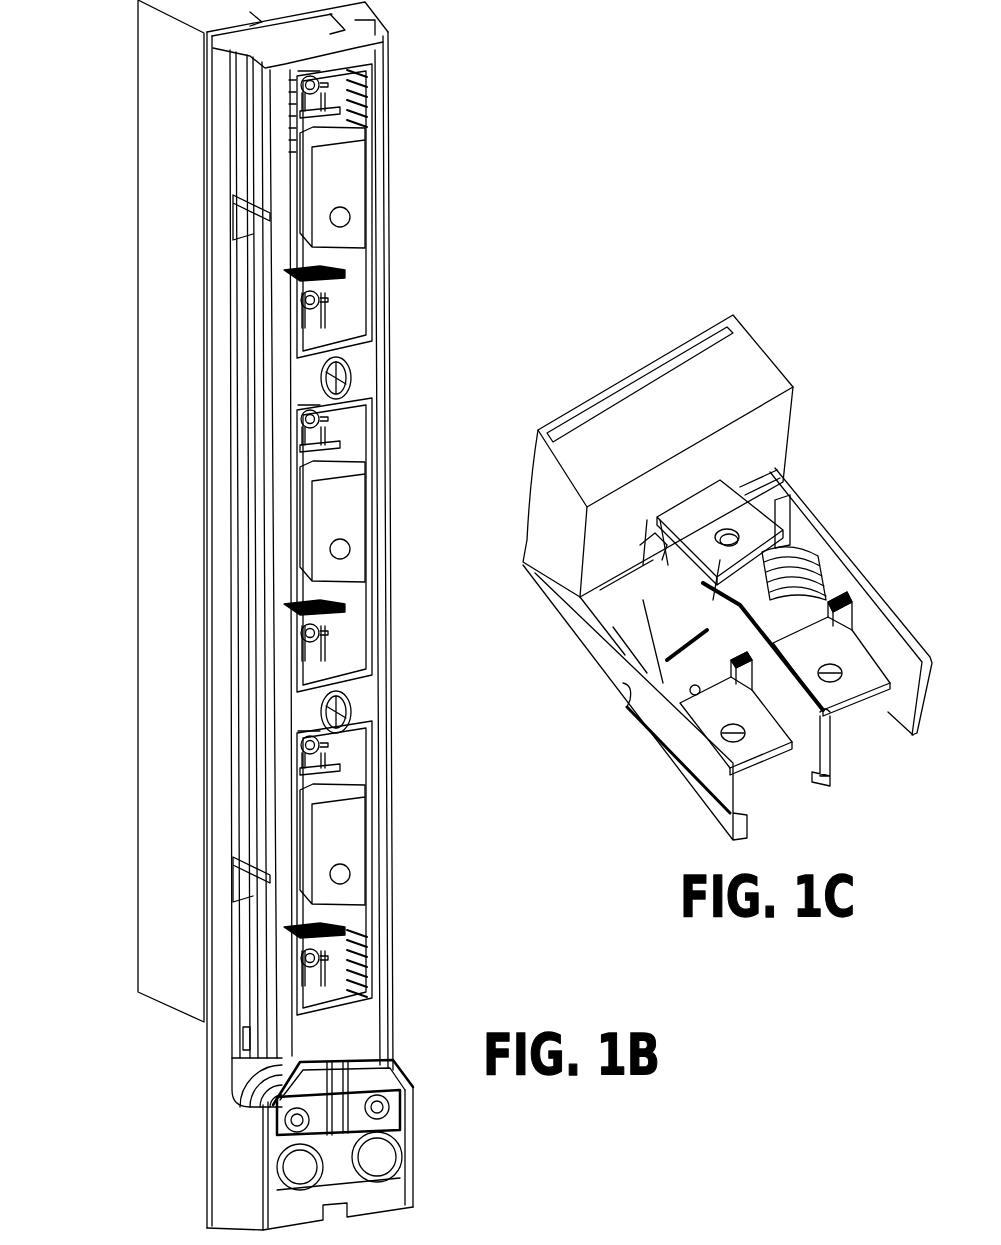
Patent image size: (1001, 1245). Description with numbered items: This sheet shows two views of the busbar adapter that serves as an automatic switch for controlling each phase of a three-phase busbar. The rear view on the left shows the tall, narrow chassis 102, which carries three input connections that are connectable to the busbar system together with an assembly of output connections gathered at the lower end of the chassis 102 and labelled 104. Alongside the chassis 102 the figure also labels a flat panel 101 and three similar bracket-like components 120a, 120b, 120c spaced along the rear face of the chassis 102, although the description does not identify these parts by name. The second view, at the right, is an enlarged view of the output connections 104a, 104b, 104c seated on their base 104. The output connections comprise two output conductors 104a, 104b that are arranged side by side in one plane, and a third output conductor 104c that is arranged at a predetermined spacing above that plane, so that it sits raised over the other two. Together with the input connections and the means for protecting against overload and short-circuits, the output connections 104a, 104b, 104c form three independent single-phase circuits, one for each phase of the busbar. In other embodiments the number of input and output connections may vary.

In FIG. 1B, the panel 101 is at (160, 455).
In FIG. 1B, the chassis 102 is at (215, 672).
In FIG. 1B, the terminal block base 104 is at (415, 1167).
In FIG. 1C, the terminal block base 104 is at (872, 620).
In FIG. 1C, the output connection 104a is at (737, 753).
In FIG. 1C, the output connection 104b is at (843, 697).
In FIG. 1C, the output connection 104c is at (745, 530).
In FIG. 1B, the first connector bracket 120a is at (335, 185).
In FIG. 1B, the second connector bracket 120b is at (340, 510).
In FIG. 1B, the third connector bracket 120c is at (345, 852).